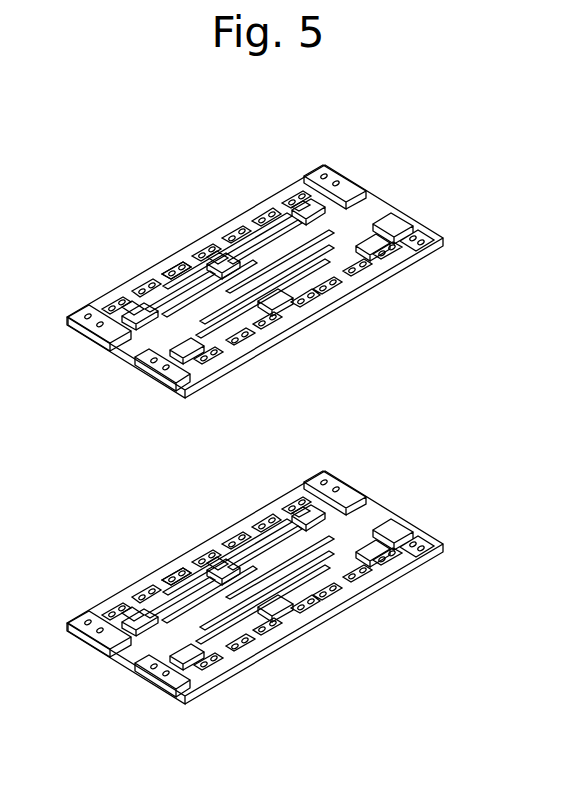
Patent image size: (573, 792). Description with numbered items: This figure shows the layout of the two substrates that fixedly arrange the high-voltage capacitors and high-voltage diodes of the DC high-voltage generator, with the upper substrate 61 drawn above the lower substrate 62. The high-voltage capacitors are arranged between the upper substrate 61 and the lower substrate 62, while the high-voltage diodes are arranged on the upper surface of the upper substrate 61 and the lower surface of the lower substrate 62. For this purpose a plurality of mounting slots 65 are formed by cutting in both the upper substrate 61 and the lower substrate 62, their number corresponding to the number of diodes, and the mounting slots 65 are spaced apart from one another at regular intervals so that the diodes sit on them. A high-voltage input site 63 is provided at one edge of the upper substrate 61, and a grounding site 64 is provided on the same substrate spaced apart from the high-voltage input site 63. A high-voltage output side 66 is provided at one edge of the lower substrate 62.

The upper substrate 61 is at (338, 308).
The lower substrate 62 is at (338, 614).
The high-voltage input site 63 is at (328, 173).
The grounding site 64 is at (428, 219).
The mounting slots 65 is at (162, 267).
The high-voltage output side 66 is at (350, 480).